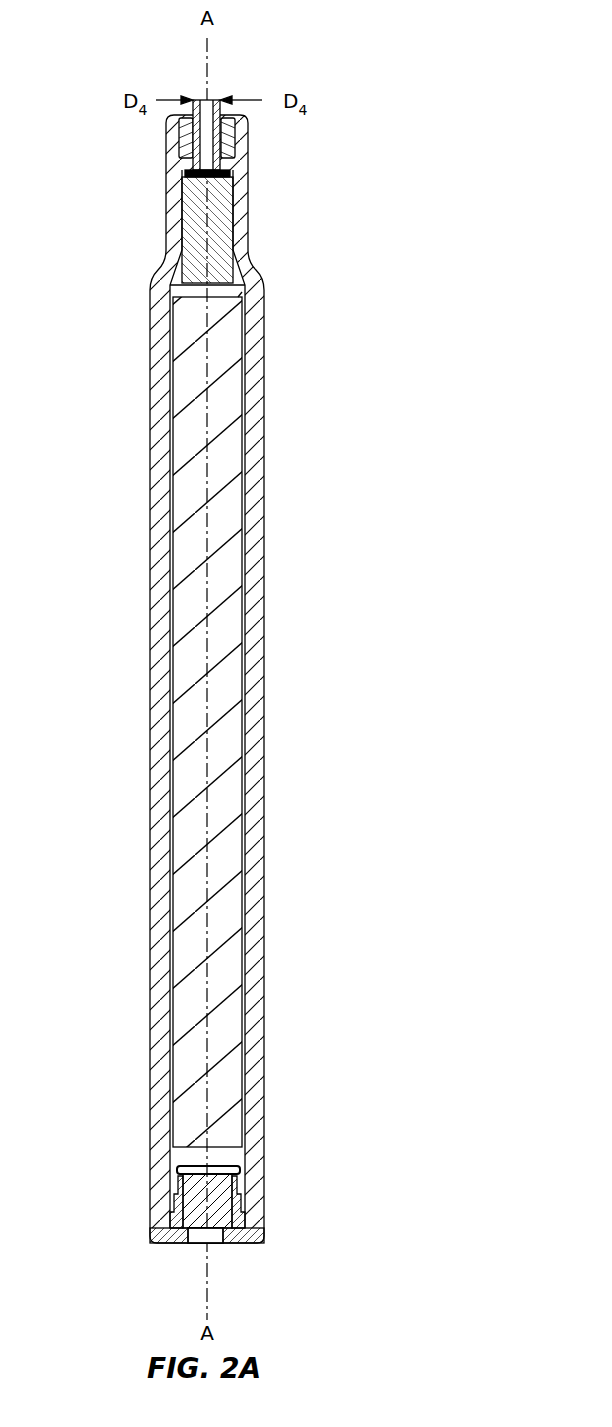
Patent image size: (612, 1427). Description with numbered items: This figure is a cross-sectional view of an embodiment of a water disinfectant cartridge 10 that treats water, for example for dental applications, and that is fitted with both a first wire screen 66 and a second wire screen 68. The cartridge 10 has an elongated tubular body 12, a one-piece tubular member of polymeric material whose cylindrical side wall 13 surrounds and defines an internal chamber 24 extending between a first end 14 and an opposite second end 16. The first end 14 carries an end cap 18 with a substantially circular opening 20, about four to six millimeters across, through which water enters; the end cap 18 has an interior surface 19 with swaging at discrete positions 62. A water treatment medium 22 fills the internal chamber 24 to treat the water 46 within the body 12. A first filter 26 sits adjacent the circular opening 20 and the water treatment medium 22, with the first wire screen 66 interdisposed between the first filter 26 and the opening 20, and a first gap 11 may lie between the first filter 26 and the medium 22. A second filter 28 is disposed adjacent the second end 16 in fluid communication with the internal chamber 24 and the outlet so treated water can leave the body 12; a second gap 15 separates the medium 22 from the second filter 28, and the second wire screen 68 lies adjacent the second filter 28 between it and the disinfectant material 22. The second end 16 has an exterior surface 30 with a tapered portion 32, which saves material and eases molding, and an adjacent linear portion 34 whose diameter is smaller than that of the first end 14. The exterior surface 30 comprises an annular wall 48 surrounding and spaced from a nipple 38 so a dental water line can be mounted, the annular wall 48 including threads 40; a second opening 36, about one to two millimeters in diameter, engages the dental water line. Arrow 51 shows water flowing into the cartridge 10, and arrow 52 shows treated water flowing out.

The cartridge 10 is at (316, 778).
The first gap 11 is at (253, 1142).
The elongated tubular body 12 is at (266, 880).
The cylindrical side wall 13 is at (256, 466).
The first end 14 is at (266, 1172).
The second gap 15 is at (182, 292).
The second end 16 is at (266, 312).
The end cap 18 is at (246, 1212).
The interior surface 19 is at (240, 1203).
The substantially circular opening 20 is at (212, 1249).
The water treatment medium 22 is at (222, 967).
The internal chamber 24 is at (256, 645).
The first filter 26 is at (198, 1194).
The second filter 28 is at (225, 222).
The exterior surface 30 is at (132, 208).
The tapered portion 32 is at (157, 268).
The linear portion 34 is at (252, 190).
The second opening 36 is at (222, 85).
The nipple 38 is at (226, 124).
The threads 40 is at (186, 140).
The water 46 is at (187, 1160).
The annular wall 48 is at (180, 118).
The arrow 51 is at (195, 1267).
The arrow 52 is at (195, 90).
The swaging at discrete positions 62 is at (180, 1170).
The first wire screen 66 is at (241, 1236).
The second wire screen 68 is at (246, 295).